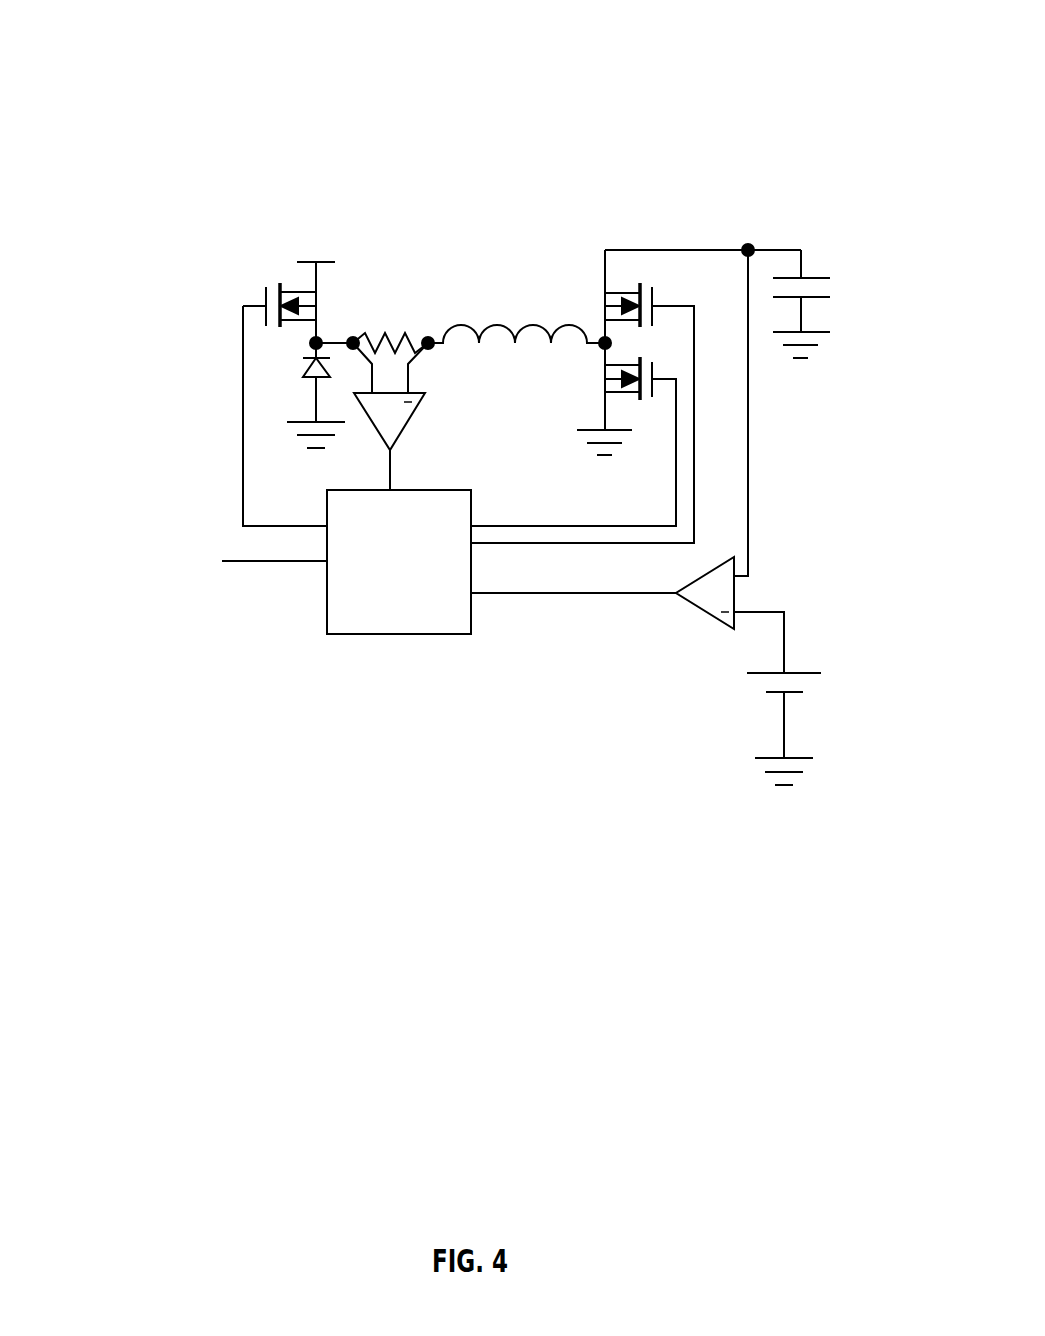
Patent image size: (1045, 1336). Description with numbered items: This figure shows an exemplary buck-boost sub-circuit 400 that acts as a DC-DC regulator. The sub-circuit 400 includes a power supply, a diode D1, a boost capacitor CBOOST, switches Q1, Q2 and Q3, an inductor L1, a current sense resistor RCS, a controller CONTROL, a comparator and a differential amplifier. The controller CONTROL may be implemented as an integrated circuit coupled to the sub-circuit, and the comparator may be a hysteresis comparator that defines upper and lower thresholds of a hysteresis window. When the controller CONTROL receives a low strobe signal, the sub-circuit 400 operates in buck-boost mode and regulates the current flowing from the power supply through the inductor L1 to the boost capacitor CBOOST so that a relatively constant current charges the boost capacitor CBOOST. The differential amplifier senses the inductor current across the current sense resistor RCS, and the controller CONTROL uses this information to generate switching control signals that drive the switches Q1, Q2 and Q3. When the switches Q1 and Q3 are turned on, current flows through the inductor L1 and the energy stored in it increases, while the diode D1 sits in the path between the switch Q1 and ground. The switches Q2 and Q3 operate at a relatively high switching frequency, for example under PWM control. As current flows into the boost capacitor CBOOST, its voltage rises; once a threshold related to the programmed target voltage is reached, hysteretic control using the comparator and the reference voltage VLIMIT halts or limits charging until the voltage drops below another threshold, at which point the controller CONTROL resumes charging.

The boost sub-circuit 400 is at (485, 16).
The switch Q1 is at (300, 313).
The diode D1 is at (294, 382).
The current sense resistor RCS is at (390, 328).
The inductor L1 is at (516, 319).
The switch Q2 is at (608, 313).
The switch Q3 is at (608, 378).
The boost capacitor CBOOST is at (860, 291).
The controller CONTROL is at (399, 562).
The reference voltage VLIMIT is at (844, 702).